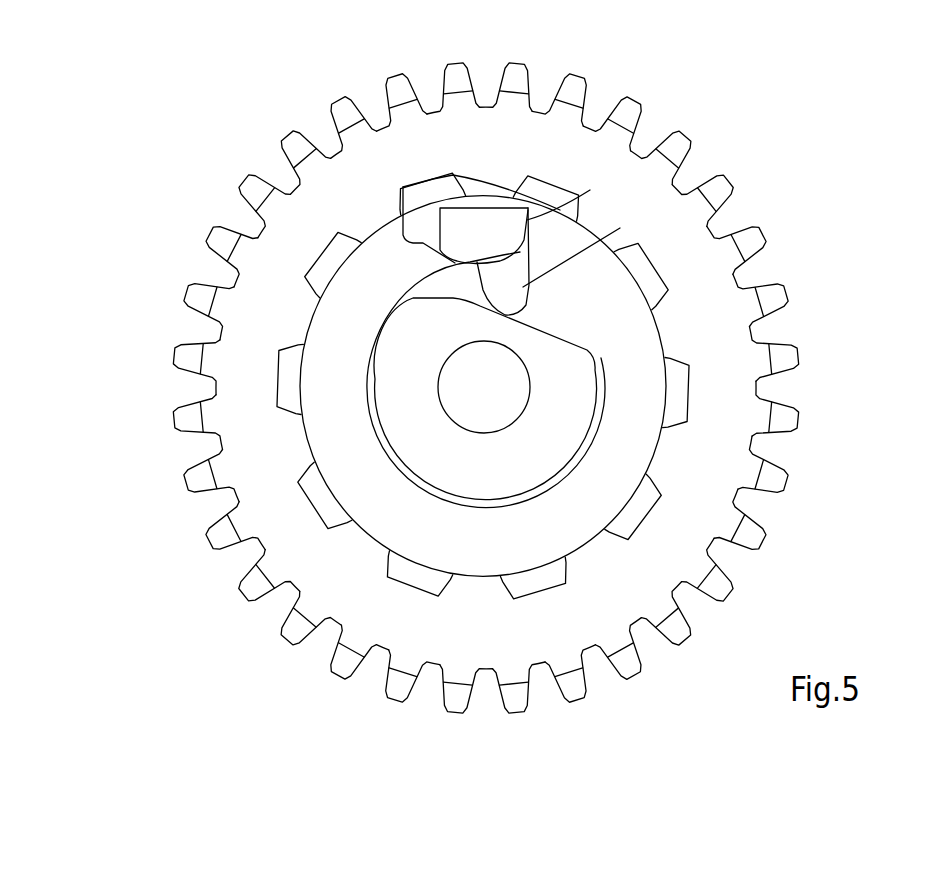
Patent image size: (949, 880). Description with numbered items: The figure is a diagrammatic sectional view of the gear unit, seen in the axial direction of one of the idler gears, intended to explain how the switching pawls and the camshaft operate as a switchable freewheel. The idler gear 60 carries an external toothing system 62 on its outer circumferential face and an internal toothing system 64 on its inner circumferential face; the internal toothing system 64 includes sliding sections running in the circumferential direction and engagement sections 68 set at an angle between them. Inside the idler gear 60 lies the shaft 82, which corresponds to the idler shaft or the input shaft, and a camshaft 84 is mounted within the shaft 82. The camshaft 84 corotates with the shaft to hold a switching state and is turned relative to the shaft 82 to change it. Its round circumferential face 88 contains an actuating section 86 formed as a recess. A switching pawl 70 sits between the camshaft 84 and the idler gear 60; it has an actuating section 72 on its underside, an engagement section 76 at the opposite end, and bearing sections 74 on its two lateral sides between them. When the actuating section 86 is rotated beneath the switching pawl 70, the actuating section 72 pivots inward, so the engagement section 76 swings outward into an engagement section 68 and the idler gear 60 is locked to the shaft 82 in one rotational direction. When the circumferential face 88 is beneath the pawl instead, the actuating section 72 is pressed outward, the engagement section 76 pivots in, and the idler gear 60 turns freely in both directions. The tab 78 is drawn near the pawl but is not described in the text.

The idler gear 60 is at (677, 225).
The external toothing system 62 is at (623, 110).
The internal toothing system 64 is at (690, 397).
The engagement section 68 is at (655, 483).
The switching pawl 70 is at (472, 224).
The actuating section 72 is at (513, 293).
The bearing section 74 is at (512, 250).
The engagement section 76 is at (427, 220).
The tab 78 is at (493, 233).
The shaft 82 is at (560, 525).
The camshaft 84 is at (477, 478).
The actuating section 86 is at (552, 337).
The circumferential face 88 is at (377, 415).